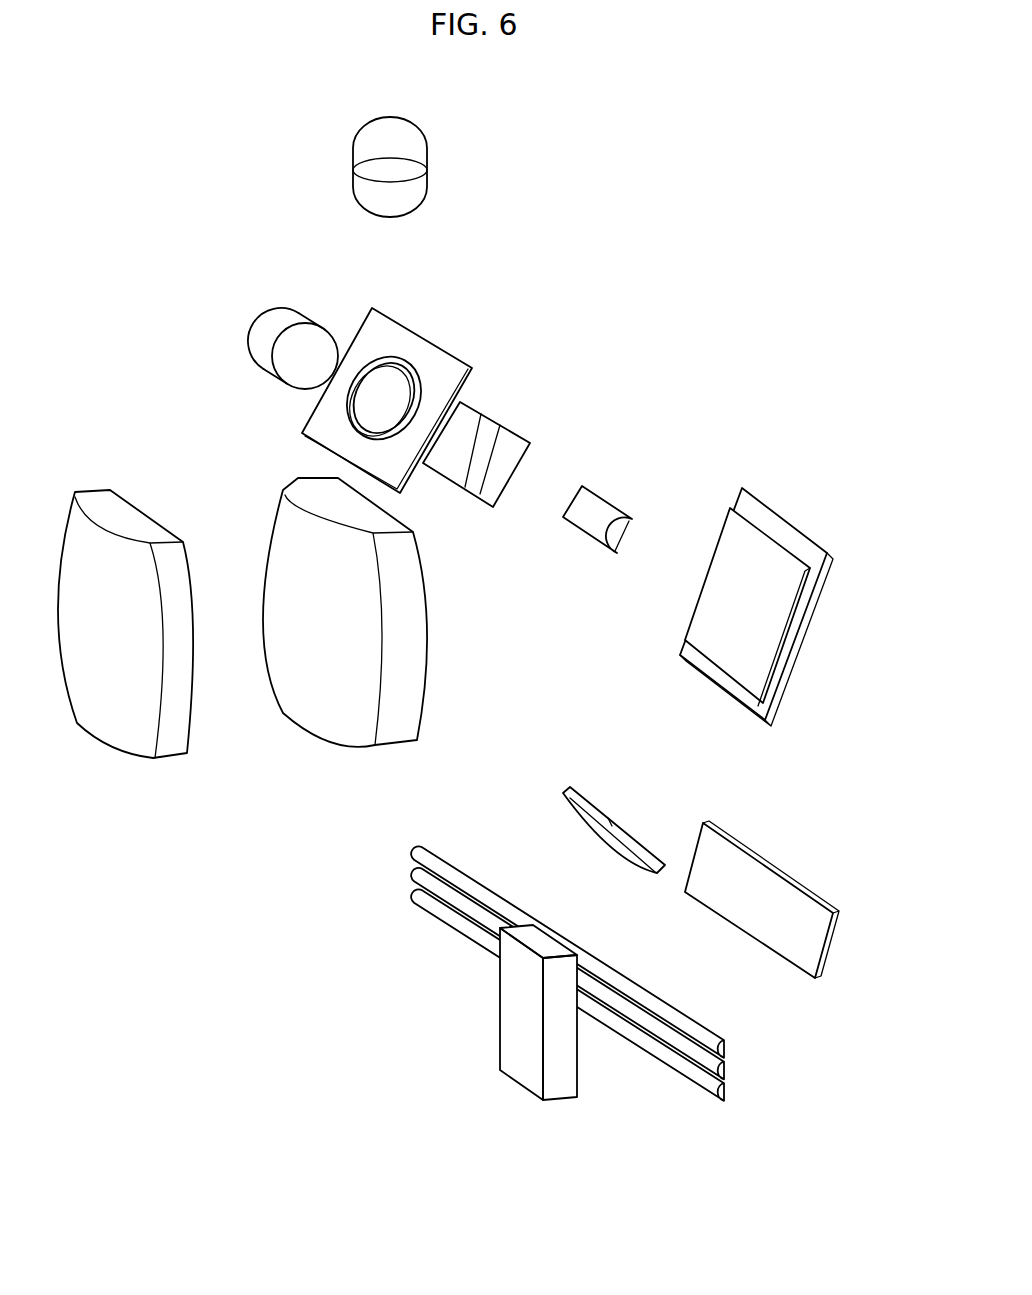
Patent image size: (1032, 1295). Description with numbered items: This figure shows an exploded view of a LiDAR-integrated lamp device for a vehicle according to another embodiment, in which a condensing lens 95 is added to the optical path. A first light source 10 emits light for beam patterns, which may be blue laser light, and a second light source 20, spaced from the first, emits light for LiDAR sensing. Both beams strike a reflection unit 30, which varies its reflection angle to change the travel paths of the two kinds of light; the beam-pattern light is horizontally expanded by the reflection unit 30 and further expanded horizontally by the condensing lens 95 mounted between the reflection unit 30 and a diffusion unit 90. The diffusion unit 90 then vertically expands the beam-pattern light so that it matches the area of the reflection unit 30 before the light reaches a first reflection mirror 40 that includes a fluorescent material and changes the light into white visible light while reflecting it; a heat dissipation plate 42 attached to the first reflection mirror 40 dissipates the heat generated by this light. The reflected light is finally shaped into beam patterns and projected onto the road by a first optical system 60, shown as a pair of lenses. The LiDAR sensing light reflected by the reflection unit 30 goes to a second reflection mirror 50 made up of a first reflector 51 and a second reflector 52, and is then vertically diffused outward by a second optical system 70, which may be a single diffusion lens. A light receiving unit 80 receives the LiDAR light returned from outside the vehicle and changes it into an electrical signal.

The first light source 10 is at (265, 322).
The second light source 20 is at (420, 153).
The reflection unit 30 is at (437, 353).
The first reflection mirror 40 is at (747, 543).
The heat dissipation plate 42 is at (793, 537).
The second reflection mirror 50 is at (726, 859).
The first reflector 51 is at (632, 840).
The second reflector 52 is at (787, 894).
The first optical system 60 is at (285, 525).
The second optical system 70 is at (672, 1057).
The light receiving unit 80 is at (520, 1065).
The diffusion unit 90 is at (603, 510).
The condensing lens 95 is at (480, 423).